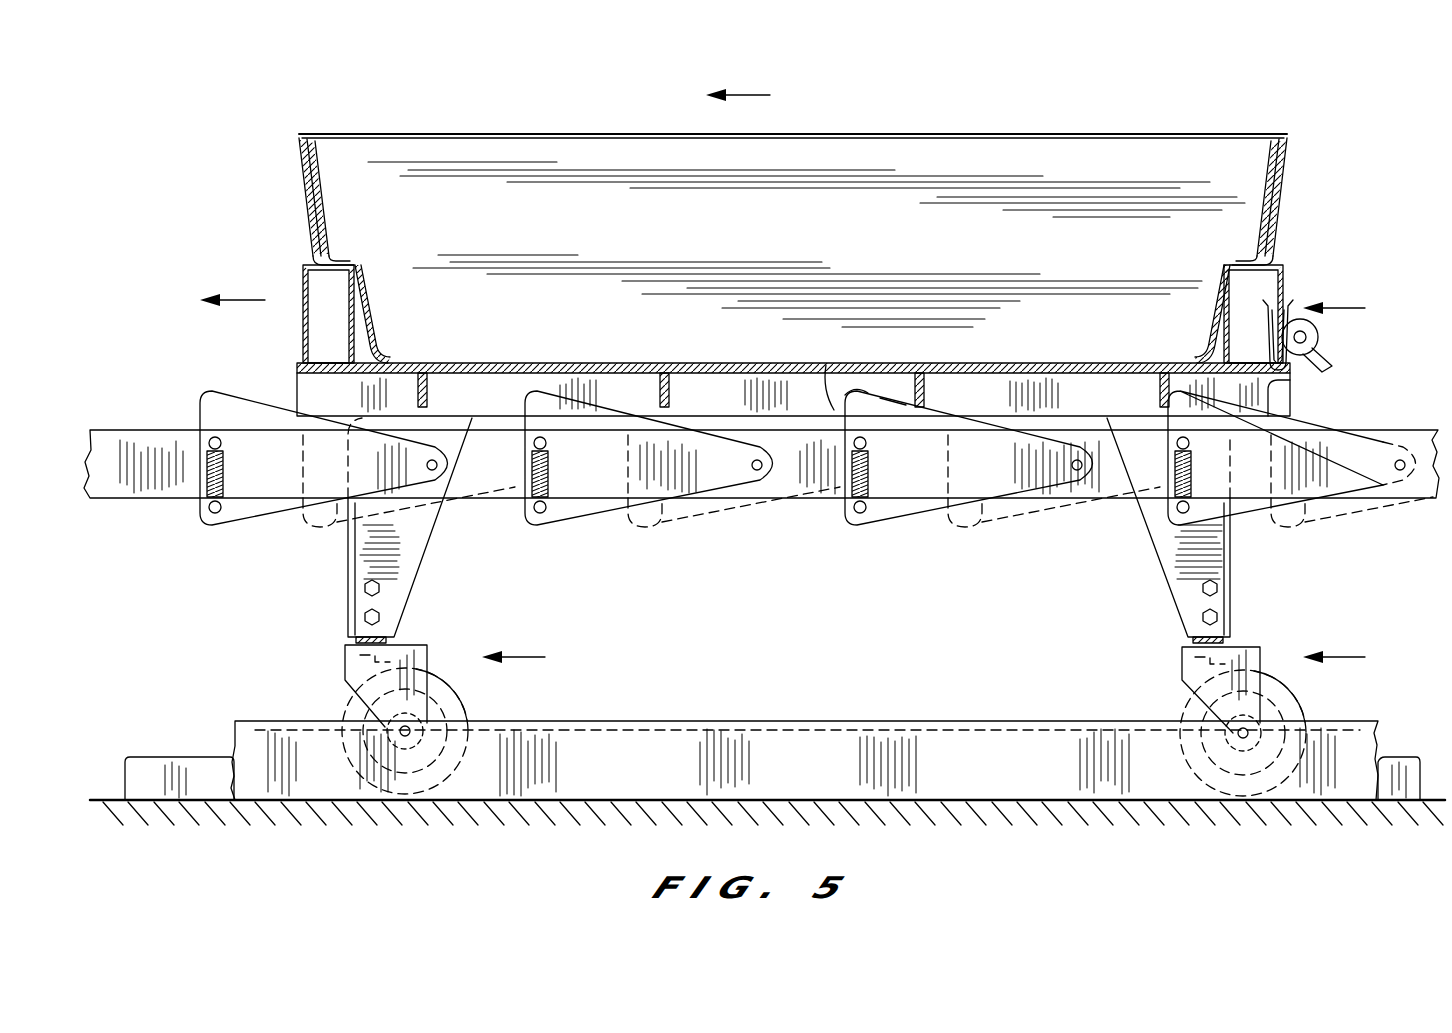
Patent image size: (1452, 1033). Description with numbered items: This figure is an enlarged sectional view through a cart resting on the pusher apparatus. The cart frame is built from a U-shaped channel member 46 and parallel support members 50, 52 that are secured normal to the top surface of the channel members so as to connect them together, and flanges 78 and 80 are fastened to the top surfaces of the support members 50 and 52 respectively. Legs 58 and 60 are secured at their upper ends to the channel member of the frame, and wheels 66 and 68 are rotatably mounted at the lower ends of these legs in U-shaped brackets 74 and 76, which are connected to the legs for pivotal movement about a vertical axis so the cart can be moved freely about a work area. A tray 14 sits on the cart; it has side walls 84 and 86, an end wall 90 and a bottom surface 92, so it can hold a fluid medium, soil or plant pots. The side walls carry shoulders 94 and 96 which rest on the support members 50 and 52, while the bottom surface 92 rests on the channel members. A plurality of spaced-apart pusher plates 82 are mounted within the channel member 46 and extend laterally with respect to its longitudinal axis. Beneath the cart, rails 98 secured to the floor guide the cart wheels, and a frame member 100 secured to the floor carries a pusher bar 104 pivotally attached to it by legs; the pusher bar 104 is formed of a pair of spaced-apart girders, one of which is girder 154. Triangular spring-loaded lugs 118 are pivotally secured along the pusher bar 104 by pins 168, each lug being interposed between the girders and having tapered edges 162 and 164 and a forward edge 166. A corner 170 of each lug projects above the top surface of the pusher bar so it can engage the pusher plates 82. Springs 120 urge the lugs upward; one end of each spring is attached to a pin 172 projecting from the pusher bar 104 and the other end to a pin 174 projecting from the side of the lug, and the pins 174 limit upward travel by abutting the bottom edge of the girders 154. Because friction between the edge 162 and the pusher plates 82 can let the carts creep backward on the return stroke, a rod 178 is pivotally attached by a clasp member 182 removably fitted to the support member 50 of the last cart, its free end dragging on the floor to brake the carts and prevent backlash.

The tray 14 is at (918, 125).
The U-shaped channel member 46 is at (1282, 400).
The support member 50 is at (1284, 290).
The support member 52 is at (303, 282).
The leg 58 is at (408, 553).
The leg 60 is at (1235, 568).
The wheel 66 is at (472, 710).
The wheel 68 is at (1190, 705).
The U-shaped bracket 74 is at (418, 648).
The U-shaped bracket 76 is at (1180, 660).
The flange 78 is at (1282, 232).
The flange 80 is at (298, 177).
The pusher plate 82 is at (424, 398).
The side wall 84 is at (1262, 175).
The side wall 86 is at (322, 203).
The end wall 90 is at (665, 224).
The bottom surface 92 is at (553, 364).
The shoulder 94 is at (1250, 258).
The shoulder 96 is at (338, 260).
The rail 98 is at (158, 770).
The frame member 100 is at (772, 745).
The pusher bar 104 is at (130, 482).
The spring-loaded lug 118 is at (228, 400).
The spring 120 is at (226, 470).
The girder 154 is at (900, 530).
The tapered edge 162 is at (890, 400).
The tapered edge 164 is at (940, 518).
The forward edge 166 is at (838, 412).
The pin 168 is at (1076, 472).
The corner 170 is at (852, 392).
The pin 172 is at (868, 445).
The pin 174 is at (854, 512).
The rod 178 is at (1312, 358).
The clasp member 182 is at (1300, 322).